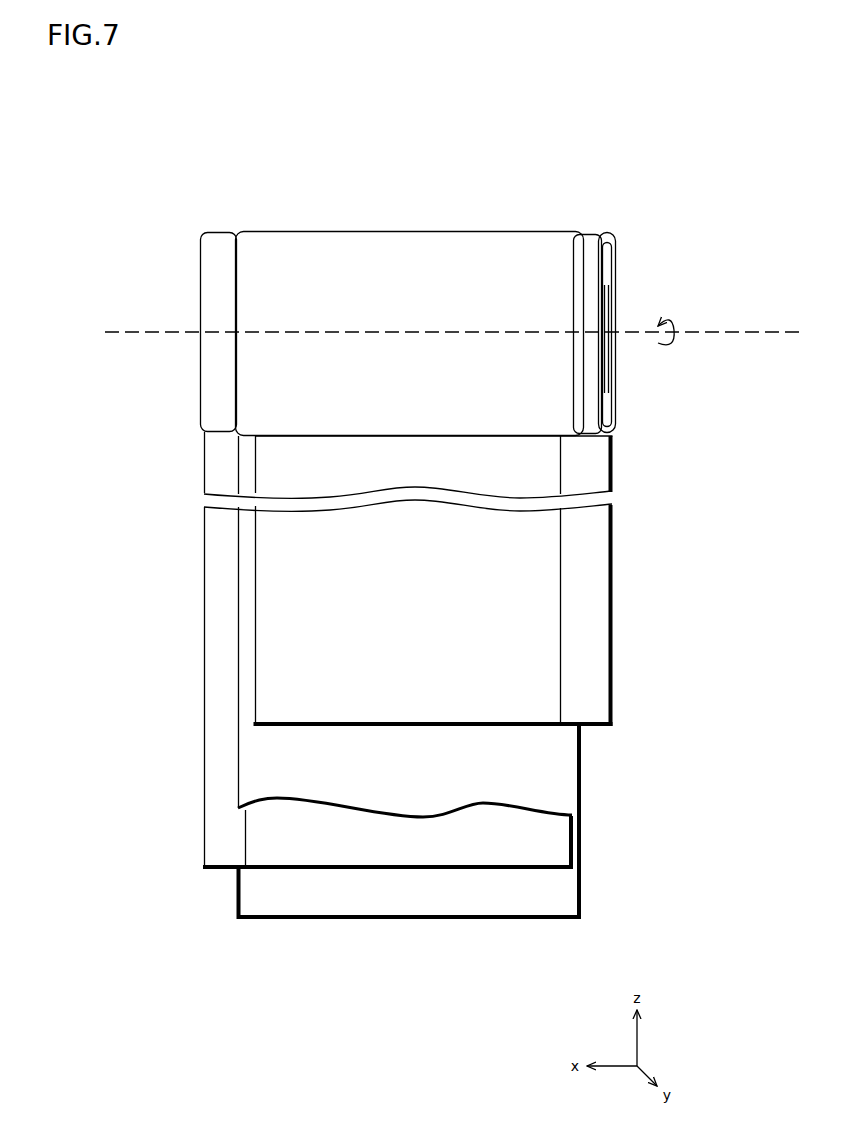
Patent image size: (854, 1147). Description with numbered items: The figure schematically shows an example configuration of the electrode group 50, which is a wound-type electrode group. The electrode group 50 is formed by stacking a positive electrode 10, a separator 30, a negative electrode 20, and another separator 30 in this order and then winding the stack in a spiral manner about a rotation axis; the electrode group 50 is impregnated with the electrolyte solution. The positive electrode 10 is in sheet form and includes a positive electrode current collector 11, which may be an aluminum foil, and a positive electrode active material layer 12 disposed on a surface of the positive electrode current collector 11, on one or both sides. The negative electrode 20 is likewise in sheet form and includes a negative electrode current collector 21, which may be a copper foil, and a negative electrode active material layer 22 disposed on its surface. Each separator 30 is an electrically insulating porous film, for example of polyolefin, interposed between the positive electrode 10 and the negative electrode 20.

The electrode group 50 is at (180, 184).
The positive electrode 10 is at (718, 513).
The positive electrode current collector 11 is at (597, 607).
The positive electrode active material layer 12 is at (552, 560).
The negative electrode 20 is at (80, 713).
The negative electrode current collector 21 is at (207, 767).
The negative electrode active material layer 22 is at (285, 848).
The separator 30 is at (243, 907).